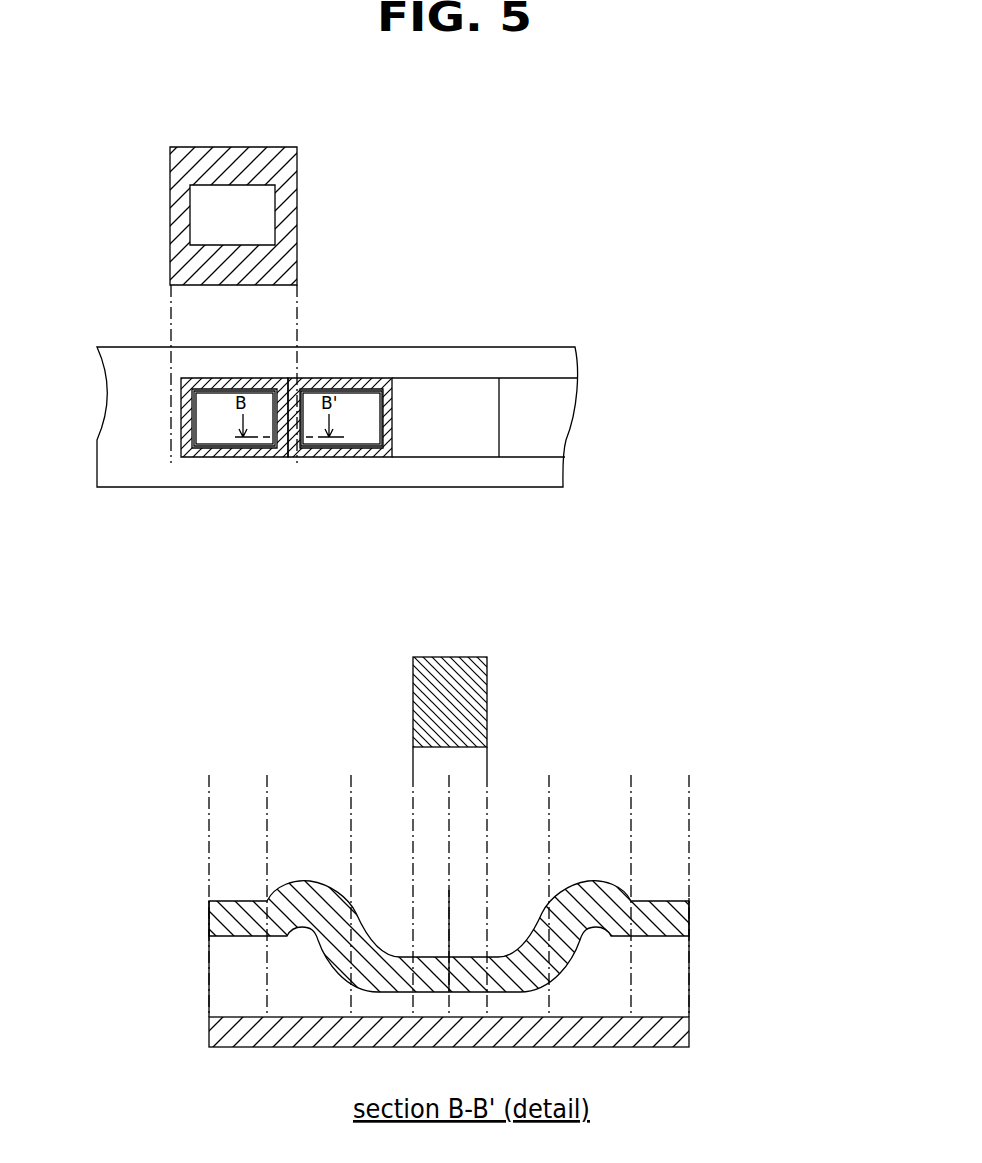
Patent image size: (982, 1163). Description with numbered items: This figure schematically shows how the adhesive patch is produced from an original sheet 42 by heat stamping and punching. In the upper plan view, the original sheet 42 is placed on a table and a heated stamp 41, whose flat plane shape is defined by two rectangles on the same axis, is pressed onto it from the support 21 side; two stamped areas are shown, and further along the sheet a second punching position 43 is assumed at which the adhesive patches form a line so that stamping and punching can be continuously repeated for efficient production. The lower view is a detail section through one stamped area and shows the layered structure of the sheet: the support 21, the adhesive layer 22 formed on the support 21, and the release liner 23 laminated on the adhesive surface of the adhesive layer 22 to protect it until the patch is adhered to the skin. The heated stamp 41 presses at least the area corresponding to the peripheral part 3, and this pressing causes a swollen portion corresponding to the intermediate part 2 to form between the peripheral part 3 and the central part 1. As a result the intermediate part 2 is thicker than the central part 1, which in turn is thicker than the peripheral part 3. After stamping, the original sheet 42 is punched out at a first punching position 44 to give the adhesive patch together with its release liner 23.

The central part 1 is at (212, 437).
The intermediate part 2 is at (233, 448).
The peripheral part 3 is at (270, 460).
The support 21 is at (690, 920).
The adhesive layer 22 is at (690, 972).
The release liner 23 is at (690, 1034).
The heated stamp 41 is at (297, 147).
The original sheet 42 is at (487, 357).
The second punching position 43 is at (427, 387).
The first punching position 44 is at (450, 891).